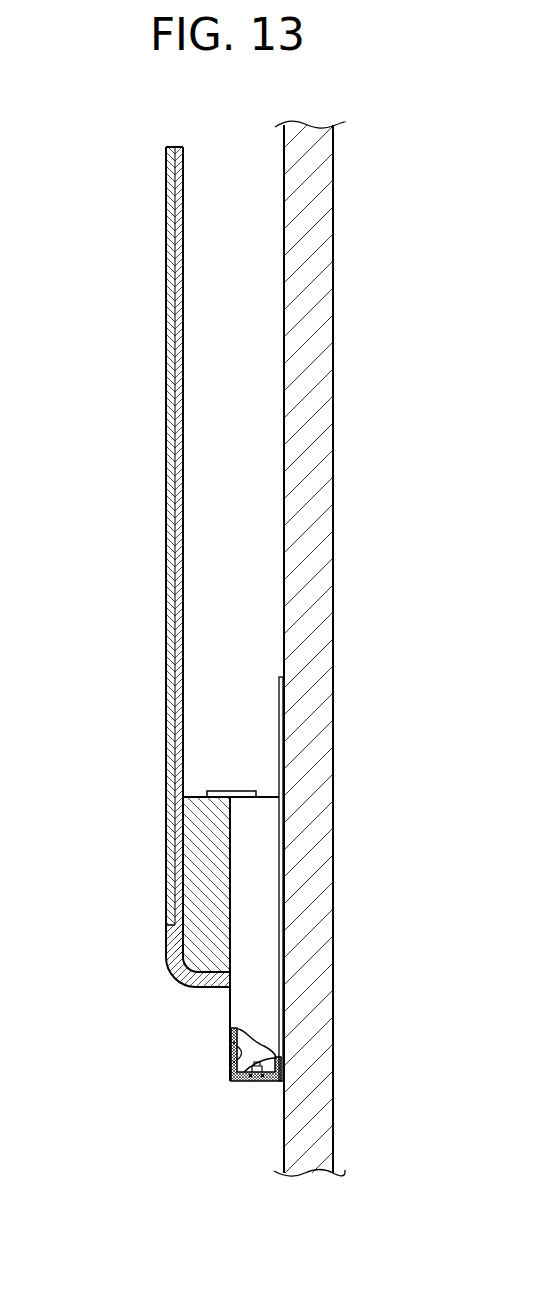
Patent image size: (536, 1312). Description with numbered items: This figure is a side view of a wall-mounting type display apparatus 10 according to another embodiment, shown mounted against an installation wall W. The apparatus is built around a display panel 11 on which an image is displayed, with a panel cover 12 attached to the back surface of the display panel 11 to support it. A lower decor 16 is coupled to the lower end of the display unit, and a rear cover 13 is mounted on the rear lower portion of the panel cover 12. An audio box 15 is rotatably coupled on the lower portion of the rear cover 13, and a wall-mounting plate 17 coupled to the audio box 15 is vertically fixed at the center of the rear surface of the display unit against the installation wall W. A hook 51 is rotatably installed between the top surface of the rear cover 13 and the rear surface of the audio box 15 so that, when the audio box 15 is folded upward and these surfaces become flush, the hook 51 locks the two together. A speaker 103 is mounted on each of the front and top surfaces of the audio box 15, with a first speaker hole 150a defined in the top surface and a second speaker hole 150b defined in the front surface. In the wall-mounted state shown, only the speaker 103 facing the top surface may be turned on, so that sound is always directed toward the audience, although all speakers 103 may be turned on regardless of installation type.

The display apparatus 10 is at (92, 186).
The display panel 11 is at (166, 297).
The panel cover 12 is at (183, 231).
The rear cover 13 is at (192, 830).
The audio box 15 is at (243, 882).
The lower decor 16 is at (170, 930).
The wall-mounting plate 17 is at (279, 703).
The hook 51 is at (220, 791).
The speaker 103 is at (262, 1044).
The first speaker hole 150a is at (230, 1050).
The second speaker hole 150b is at (252, 1082).
The installation wall W is at (333, 497).